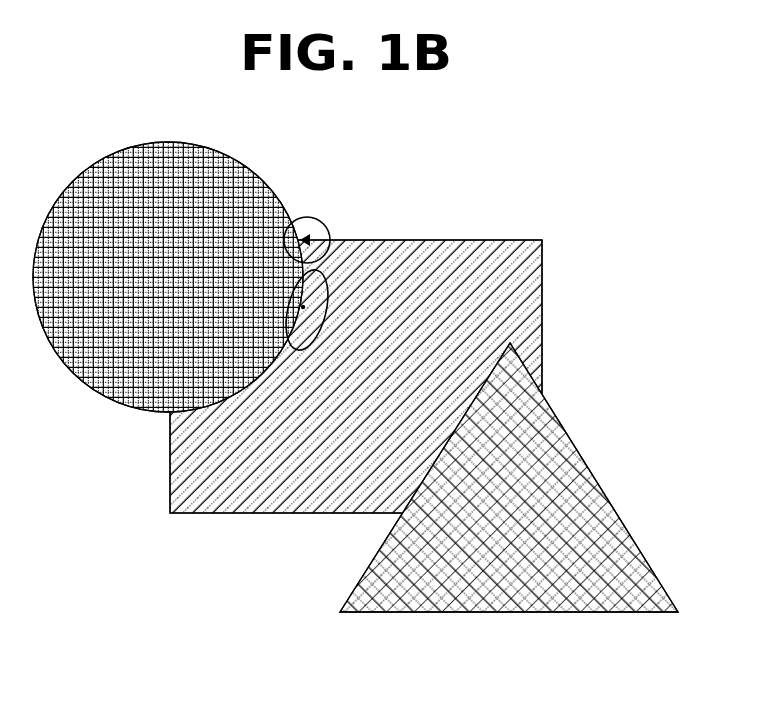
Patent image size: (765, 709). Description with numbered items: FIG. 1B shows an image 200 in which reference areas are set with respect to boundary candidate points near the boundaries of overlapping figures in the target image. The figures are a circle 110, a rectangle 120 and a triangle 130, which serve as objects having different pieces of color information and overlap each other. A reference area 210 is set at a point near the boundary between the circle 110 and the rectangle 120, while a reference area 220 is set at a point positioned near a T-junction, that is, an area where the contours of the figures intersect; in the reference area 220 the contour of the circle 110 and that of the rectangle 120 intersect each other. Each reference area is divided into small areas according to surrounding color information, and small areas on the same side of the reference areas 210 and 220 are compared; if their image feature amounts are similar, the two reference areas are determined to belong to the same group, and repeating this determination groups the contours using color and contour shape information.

The composite image / overlapping object arrangement 200 is at (73, 121).
The figure (circle) 110 is at (93, 380).
The figure (rectangle) 120 is at (497, 256).
The figure (triangle) 130 is at (628, 608).
The reference area 210 is at (304, 308).
The reference area 220 is at (308, 217).